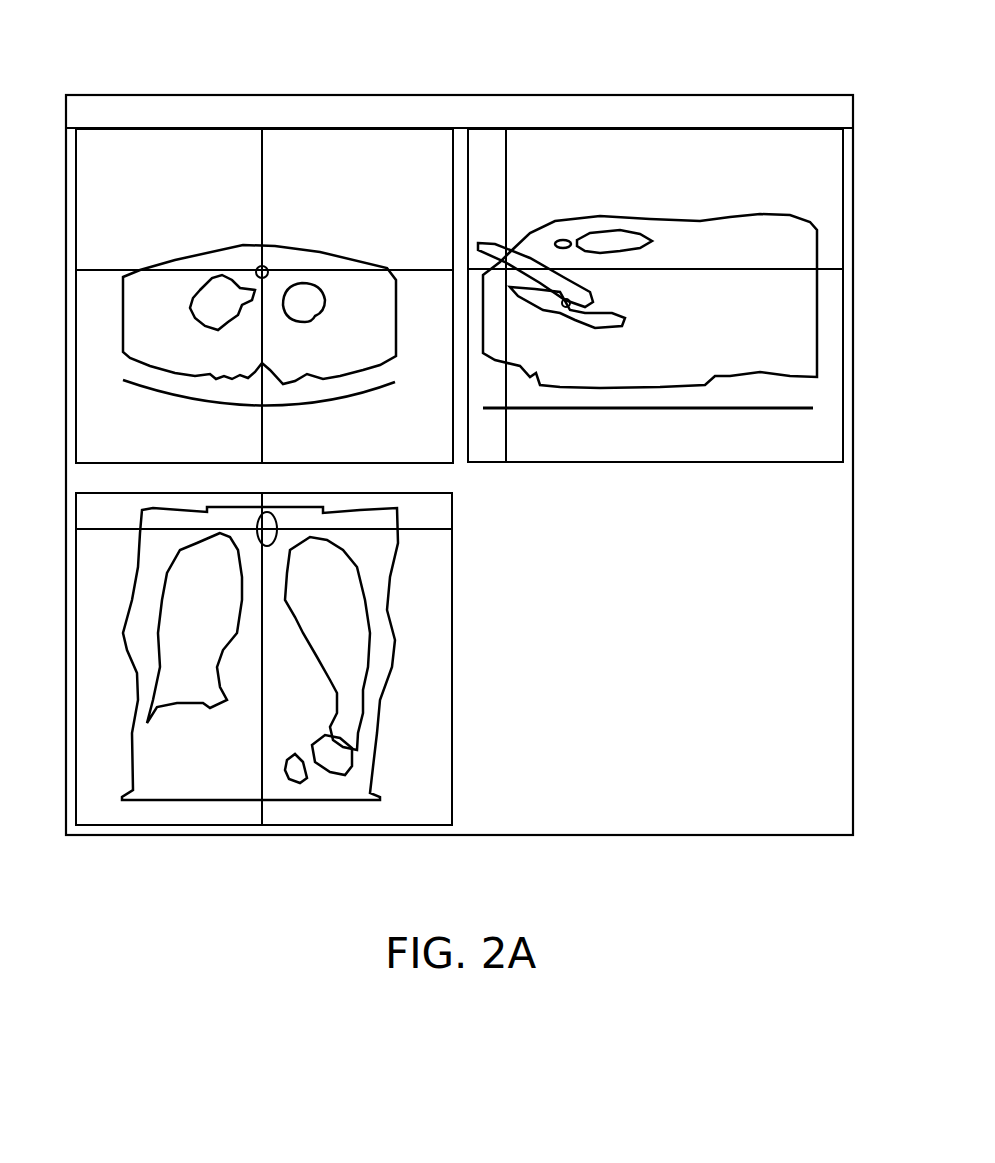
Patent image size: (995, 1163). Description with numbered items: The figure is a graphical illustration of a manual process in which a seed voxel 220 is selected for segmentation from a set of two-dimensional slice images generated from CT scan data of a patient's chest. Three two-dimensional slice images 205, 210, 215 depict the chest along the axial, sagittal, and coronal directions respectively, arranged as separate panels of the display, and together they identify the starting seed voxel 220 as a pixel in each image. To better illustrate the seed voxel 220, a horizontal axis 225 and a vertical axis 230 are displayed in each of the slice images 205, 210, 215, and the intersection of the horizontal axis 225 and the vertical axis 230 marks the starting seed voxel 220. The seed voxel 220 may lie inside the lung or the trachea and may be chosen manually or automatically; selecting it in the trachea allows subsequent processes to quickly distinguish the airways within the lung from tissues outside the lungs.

The 2D slice image (axial) 205 is at (183, 87).
The 2D slice image (sagittal) 210 is at (552, 88).
The 2D slice image (coronal) 215 is at (153, 862).
The seed voxel 220 is at (273, 507).
The horizontal axis 225 is at (456, 280).
The vertical axis 230 is at (296, 647).